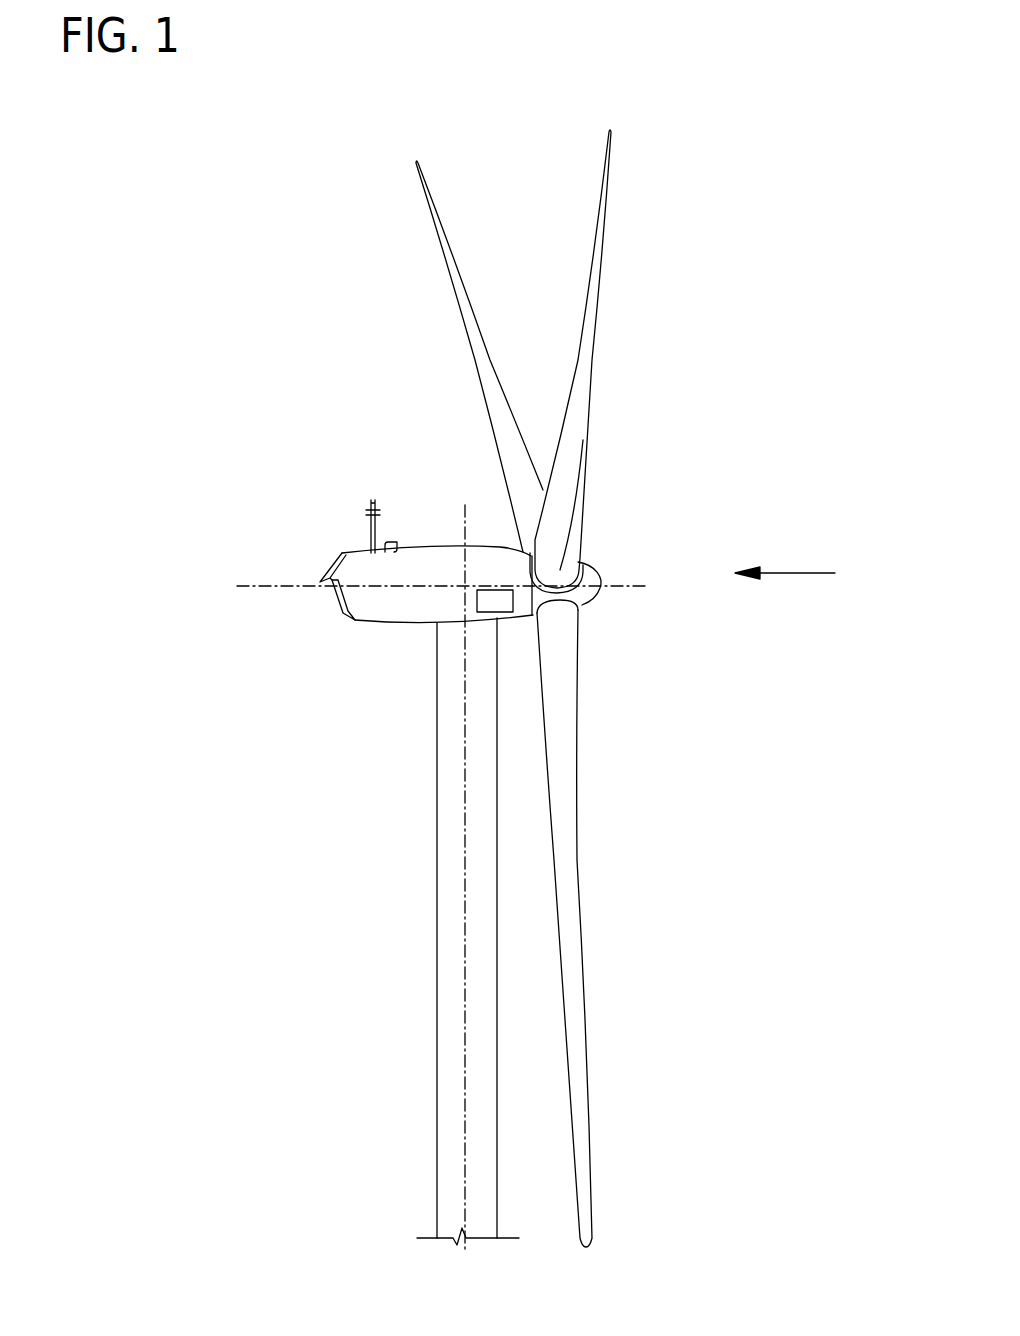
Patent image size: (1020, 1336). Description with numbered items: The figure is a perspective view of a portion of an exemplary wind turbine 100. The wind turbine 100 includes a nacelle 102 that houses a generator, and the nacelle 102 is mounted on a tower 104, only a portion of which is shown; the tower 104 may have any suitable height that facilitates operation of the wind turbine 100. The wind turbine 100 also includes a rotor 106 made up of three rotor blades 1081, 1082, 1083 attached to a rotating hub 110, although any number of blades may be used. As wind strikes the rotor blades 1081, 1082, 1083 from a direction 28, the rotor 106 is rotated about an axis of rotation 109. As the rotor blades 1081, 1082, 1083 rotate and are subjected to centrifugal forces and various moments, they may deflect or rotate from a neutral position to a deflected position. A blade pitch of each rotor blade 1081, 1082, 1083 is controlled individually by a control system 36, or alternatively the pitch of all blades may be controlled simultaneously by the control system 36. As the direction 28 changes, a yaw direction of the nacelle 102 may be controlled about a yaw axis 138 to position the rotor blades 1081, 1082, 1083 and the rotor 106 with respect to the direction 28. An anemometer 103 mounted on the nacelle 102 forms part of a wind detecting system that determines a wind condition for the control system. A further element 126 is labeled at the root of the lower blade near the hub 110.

The wind turbine 100 is at (311, 211).
The nacelle 102 is at (372, 623).
The anemometer 103 is at (352, 497).
The tower 104 is at (436, 883).
The rotor 106 is at (650, 335).
The axis of rotation 109 is at (622, 585).
The rotating hub 110 is at (595, 592).
The pitch bearing 126 is at (558, 607).
The yaw axis 138 is at (465, 793).
The control system 36 is at (495, 600).
The direction 28 is at (801, 573).
The rotor blade 1081 is at (611, 210).
The rotor blade 1082 is at (453, 245).
The rotor blade 1083 is at (585, 992).